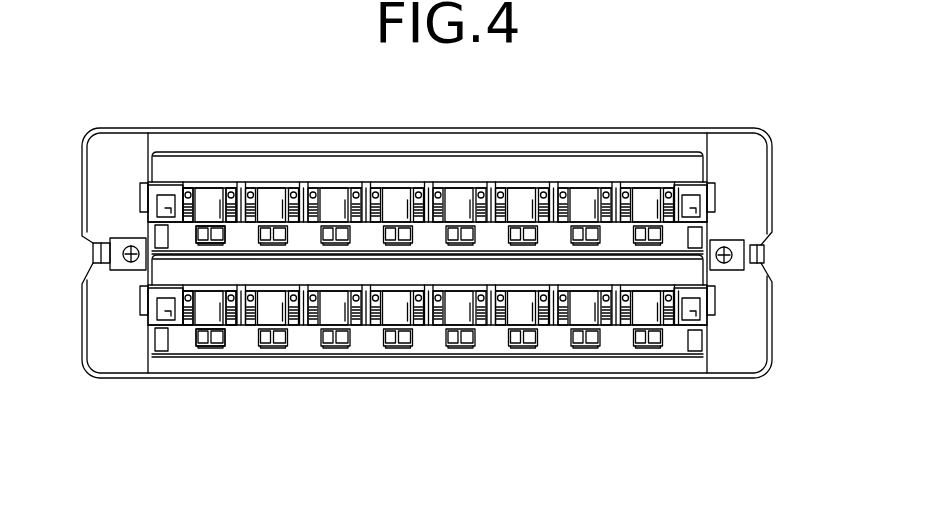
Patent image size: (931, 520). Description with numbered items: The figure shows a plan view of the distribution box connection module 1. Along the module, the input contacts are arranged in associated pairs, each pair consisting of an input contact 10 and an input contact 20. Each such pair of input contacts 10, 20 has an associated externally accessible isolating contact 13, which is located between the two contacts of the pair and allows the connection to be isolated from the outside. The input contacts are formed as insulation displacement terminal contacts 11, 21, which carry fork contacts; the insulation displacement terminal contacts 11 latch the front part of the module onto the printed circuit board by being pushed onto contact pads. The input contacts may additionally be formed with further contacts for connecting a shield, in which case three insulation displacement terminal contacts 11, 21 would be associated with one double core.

The distribution box connection module 1 is at (533, 117).
The input contact 10 is at (727, 193).
The input contact 20 is at (725, 308).
The insulation displacement terminal contact 11 is at (231, 190).
The isolating contact 13 is at (195, 236).
The insulation displacement terminal contact 21 is at (186, 330).